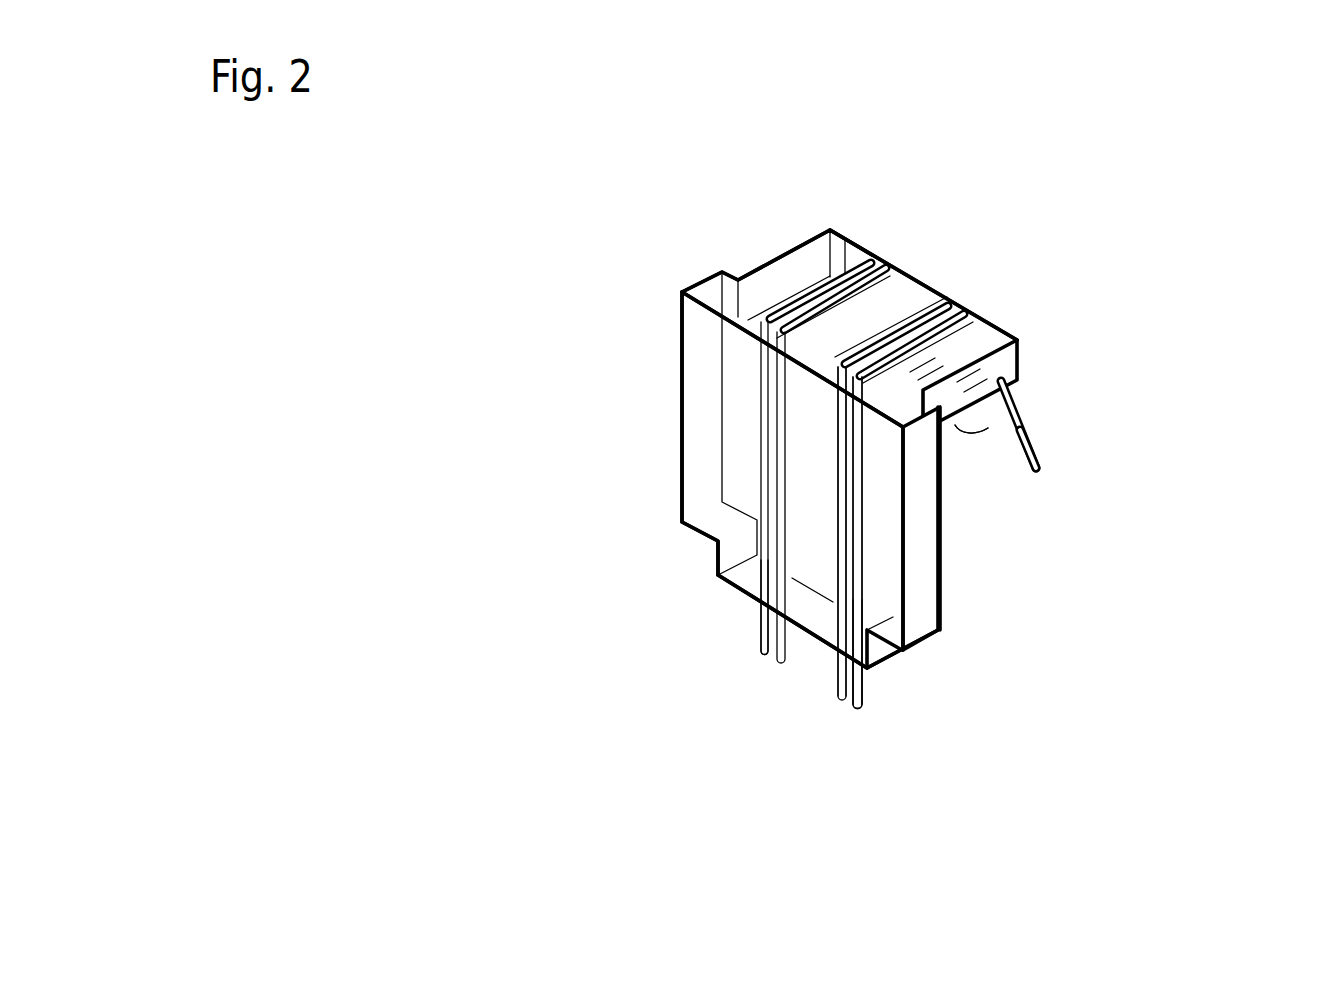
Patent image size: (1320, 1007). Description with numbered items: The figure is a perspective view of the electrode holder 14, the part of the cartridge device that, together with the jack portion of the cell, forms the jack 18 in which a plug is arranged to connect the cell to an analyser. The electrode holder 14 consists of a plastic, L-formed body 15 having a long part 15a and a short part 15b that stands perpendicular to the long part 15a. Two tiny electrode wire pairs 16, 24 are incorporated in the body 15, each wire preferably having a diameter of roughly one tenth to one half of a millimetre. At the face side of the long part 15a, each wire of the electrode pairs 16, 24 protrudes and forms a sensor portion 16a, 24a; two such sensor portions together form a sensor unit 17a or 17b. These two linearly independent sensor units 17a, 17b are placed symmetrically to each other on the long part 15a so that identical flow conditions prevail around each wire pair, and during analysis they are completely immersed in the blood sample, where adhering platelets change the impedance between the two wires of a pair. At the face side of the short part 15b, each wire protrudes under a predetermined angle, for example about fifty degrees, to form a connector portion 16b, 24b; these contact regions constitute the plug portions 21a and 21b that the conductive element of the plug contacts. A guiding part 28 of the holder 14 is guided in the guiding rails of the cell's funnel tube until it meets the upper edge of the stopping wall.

The electrode holder 14 is at (630, 517).
The body 15 is at (716, 251).
The long part 15a is at (813, 430).
The short part 15b is at (912, 300).
The electrode wire pair 16 is at (845, 500).
The sensor portion 16a is at (852, 710).
The connector portion 16b is at (1025, 437).
The sensor unit 17a is at (836, 727).
The sensor unit 17b is at (722, 650).
The jack 18 is at (700, 422).
The plug portion 21a is at (1040, 487).
The plug portion 21b is at (1023, 387).
The electrode wire pair 24 is at (866, 255).
The sensor portion 24a is at (760, 667).
The connector portion 24b is at (960, 427).
The guiding part 28 is at (913, 593).